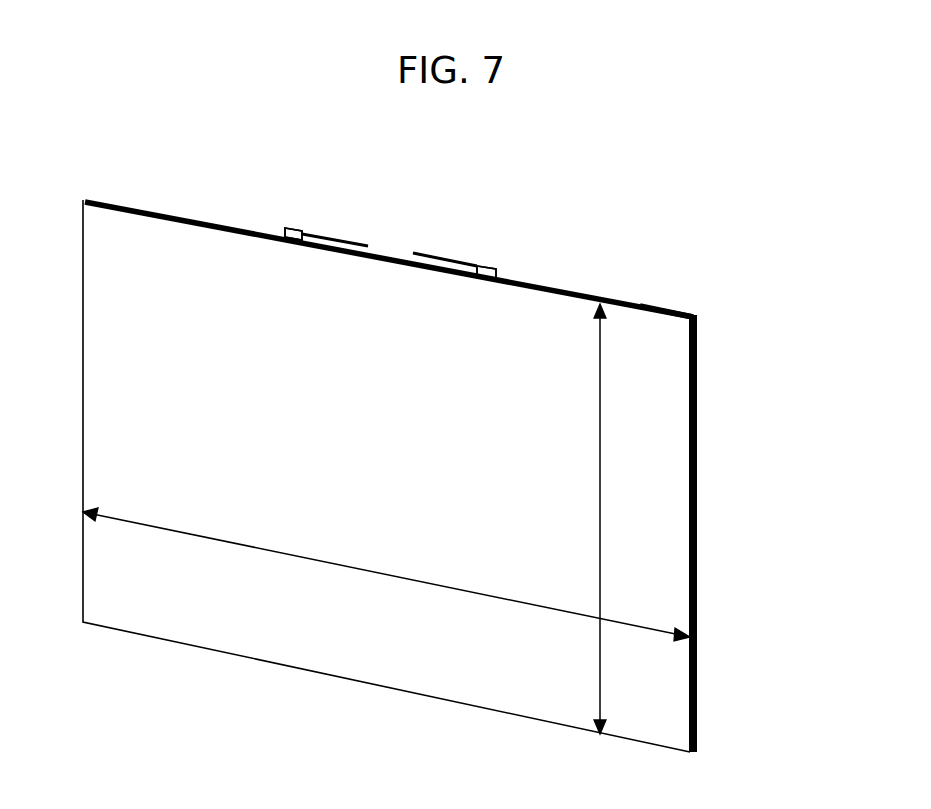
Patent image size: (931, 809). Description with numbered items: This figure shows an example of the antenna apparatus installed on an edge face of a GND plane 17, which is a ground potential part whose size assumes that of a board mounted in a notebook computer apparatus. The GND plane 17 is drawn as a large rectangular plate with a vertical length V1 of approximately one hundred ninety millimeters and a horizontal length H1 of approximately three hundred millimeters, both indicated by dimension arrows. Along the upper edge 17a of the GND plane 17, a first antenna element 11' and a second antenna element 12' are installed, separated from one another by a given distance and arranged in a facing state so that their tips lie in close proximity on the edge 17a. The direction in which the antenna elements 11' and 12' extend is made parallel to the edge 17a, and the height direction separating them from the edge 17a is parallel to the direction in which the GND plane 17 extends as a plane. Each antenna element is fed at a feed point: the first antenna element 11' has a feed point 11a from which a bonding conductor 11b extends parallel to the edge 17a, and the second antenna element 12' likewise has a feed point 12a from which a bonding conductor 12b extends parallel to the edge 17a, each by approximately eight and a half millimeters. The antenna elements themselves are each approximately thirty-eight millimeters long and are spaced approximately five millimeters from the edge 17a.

The GND plane 17 is at (697, 490).
The edge 17a is at (656, 309).
The first antenna element 11' is at (326, 197).
The feed point 11a is at (351, 240).
The bonding conductor 11b is at (285, 229).
The second antenna element 12' is at (454, 213).
The feed point 12a is at (478, 266).
The bonding conductor 12b is at (497, 272).
The vertical length V1 is at (601, 557).
The horizontal length H1 is at (641, 630).